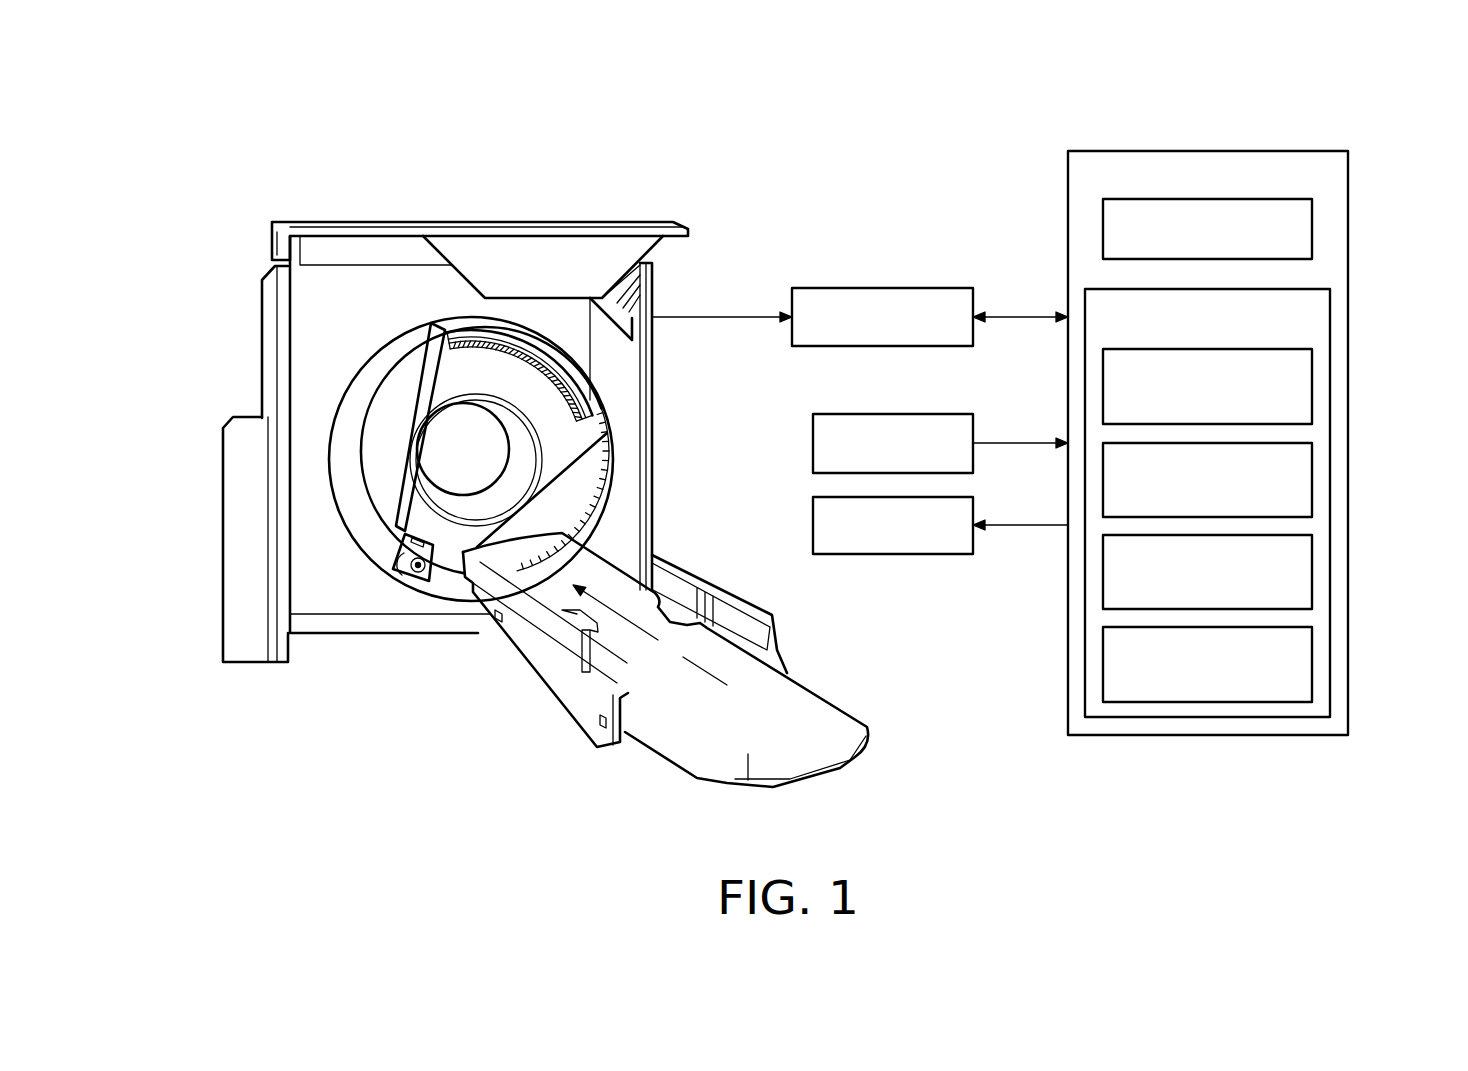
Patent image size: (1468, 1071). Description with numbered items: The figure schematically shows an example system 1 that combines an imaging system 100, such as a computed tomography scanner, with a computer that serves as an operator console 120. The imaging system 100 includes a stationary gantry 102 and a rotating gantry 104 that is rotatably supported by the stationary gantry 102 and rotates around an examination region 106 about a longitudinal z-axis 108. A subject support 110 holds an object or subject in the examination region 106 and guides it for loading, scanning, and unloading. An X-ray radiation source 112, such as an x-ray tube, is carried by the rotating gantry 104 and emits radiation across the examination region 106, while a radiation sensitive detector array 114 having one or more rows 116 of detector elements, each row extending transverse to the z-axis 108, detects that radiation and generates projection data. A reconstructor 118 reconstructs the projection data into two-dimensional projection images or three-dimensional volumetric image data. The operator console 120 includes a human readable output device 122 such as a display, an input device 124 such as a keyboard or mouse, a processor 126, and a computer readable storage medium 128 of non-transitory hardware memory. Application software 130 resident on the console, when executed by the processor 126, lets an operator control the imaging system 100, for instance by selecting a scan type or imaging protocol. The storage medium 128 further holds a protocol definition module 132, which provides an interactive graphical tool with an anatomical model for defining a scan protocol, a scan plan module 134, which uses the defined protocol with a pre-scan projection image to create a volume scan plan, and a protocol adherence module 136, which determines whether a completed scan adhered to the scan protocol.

The system 1 is at (481, 438).
The imaging system 100 is at (530, 472).
The stationary gantry 102 is at (441, 442).
The rotating gantry 104 is at (463, 456).
The examination region 106 is at (476, 460).
The z-axis 108 is at (665, 665).
The subject support 110 is at (757, 636).
The X-ray radiation source 112 is at (406, 614).
The radiation sensitive detector array 114 is at (585, 375).
The rows of detector elements 116 is at (511, 379).
The reconstructor 118 is at (882, 279).
The operator console 120 is at (1253, 443).
The output device 122 is at (848, 443).
The input device 124 is at (848, 525).
The processor 126 is at (1271, 229).
The computer readable storage medium 128 is at (1262, 503).
The application software 130 is at (1271, 386).
The protocol definition module 132 is at (1271, 480).
The scan plan module 134 is at (1271, 572).
The protocol adherence module 136 is at (1271, 664).